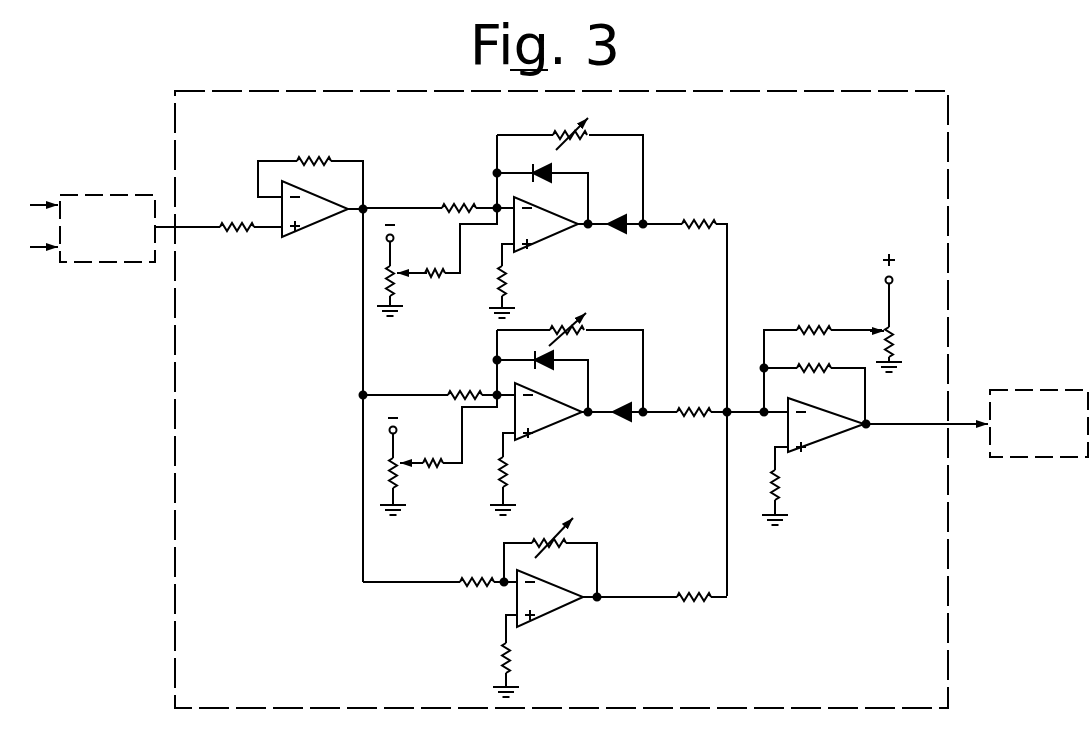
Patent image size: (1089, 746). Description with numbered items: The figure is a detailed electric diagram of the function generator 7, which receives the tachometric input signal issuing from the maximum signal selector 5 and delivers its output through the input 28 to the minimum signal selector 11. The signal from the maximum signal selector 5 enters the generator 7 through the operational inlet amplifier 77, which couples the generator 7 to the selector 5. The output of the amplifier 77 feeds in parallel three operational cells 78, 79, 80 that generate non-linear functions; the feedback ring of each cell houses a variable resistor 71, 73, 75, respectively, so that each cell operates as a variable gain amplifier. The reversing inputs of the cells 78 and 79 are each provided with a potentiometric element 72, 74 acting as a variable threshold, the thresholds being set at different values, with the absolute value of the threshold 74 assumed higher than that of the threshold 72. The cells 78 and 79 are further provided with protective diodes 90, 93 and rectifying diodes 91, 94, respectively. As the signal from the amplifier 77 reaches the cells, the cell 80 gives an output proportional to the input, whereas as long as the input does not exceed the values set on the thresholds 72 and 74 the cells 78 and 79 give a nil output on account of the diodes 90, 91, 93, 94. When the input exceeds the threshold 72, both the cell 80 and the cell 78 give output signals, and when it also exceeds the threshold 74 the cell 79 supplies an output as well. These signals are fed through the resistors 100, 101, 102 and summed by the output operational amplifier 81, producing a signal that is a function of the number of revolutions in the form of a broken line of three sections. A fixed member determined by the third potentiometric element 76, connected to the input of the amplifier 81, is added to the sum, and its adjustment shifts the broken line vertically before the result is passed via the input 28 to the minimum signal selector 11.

The maximum signal selector 5 is at (108, 262).
The function generator 7 is at (170, 500).
The minimum signal selector 11 is at (1030, 390).
The input 28 is at (951, 426).
The variable resistor 71 is at (571, 132).
The potentiometric element 72 is at (400, 268).
The variable resistor 73 is at (564, 324).
The potentiometric element 74 is at (402, 455).
The variable resistor 75 is at (551, 530).
The third potentiometric element 76 is at (885, 326).
The operational inlet amplifier 77 is at (306, 246).
The operational cell 78 is at (562, 247).
The operational cell 79 is at (568, 438).
The operational cell 80 is at (564, 622).
The output operational amplifier 81 is at (829, 452).
The protective diode 90 is at (548, 170).
The rectifying diode 91 is at (618, 218).
The protective diode 93 is at (551, 362).
The rectifying diode 94 is at (622, 400).
The resistor 100 is at (703, 216).
The resistor 101 is at (693, 404).
The resistor 102 is at (695, 588).